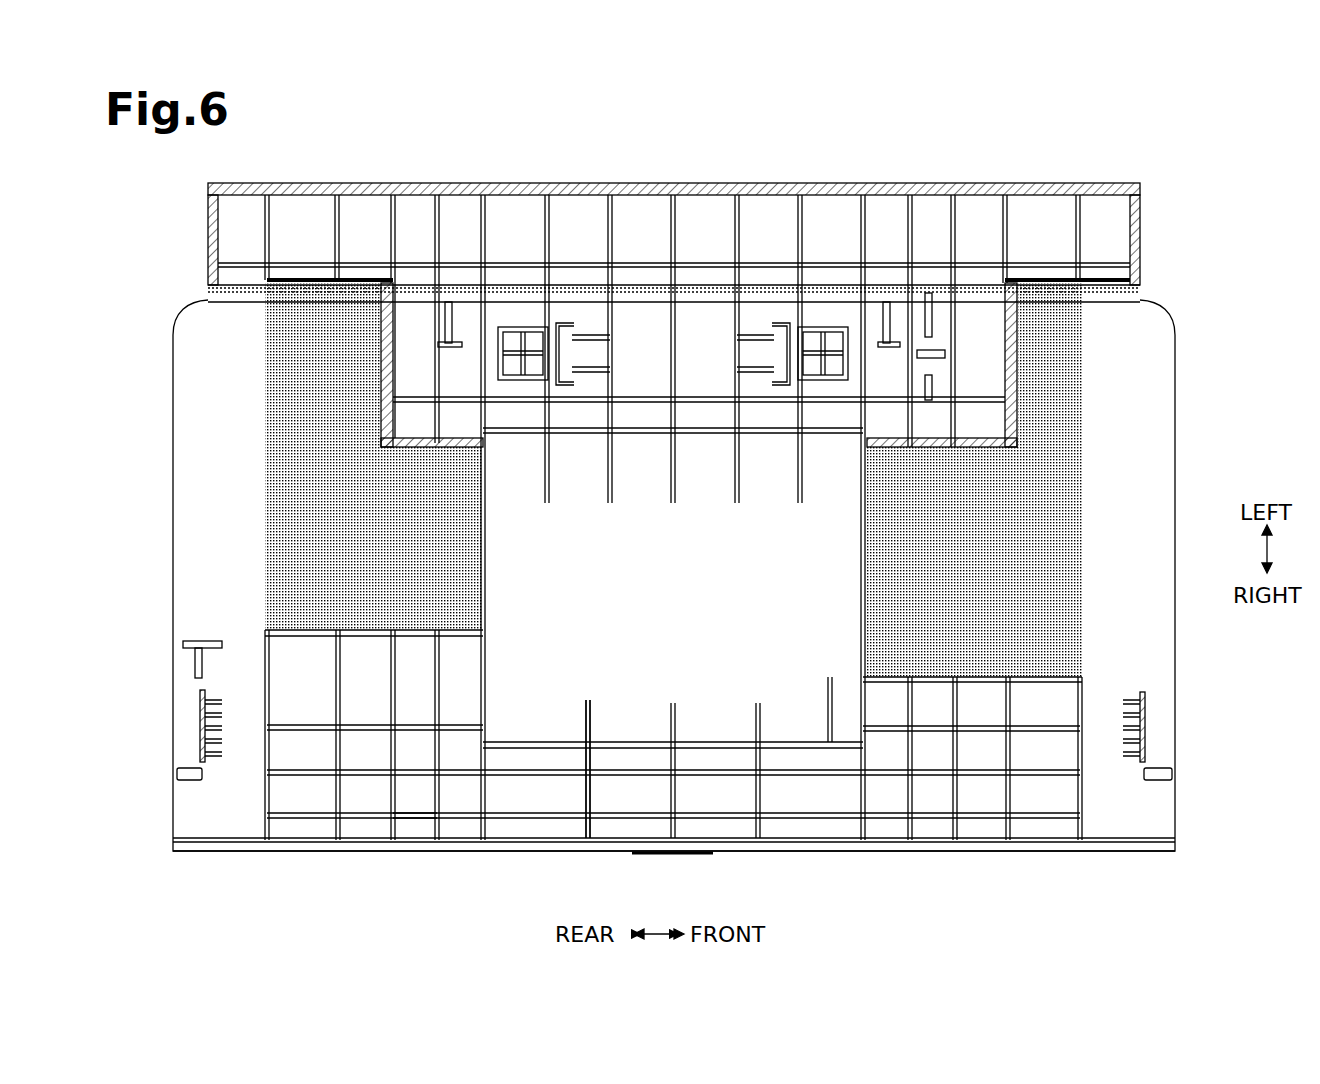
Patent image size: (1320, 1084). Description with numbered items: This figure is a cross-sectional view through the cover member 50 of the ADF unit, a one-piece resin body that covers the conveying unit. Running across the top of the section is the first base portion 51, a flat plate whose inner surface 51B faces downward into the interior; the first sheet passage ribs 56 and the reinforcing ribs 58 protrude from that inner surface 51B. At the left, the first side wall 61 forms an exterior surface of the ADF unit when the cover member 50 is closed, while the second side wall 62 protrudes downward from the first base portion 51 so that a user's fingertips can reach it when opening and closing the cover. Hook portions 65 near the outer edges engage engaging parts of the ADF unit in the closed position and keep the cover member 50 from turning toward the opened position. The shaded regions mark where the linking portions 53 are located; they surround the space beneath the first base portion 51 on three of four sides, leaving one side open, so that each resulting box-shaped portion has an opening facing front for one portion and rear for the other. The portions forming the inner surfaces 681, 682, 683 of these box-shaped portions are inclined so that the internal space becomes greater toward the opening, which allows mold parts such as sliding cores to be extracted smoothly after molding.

The cover member 50 is at (1154, 220).
The first base portion 51 is at (790, 703).
The inner surface 51B is at (530, 703).
The linking portions 53 is at (307, 280).
The first sheet passage ribs 56 is at (915, 745).
The reinforcing ribs 58 is at (415, 818).
The first side wall 61 is at (640, 184).
The second side wall 62 is at (890, 848).
The hook portions 65 is at (205, 725).
The inner surface 681 is at (320, 627).
The inner surface 682 is at (440, 462).
The inner surface 683 is at (245, 292).